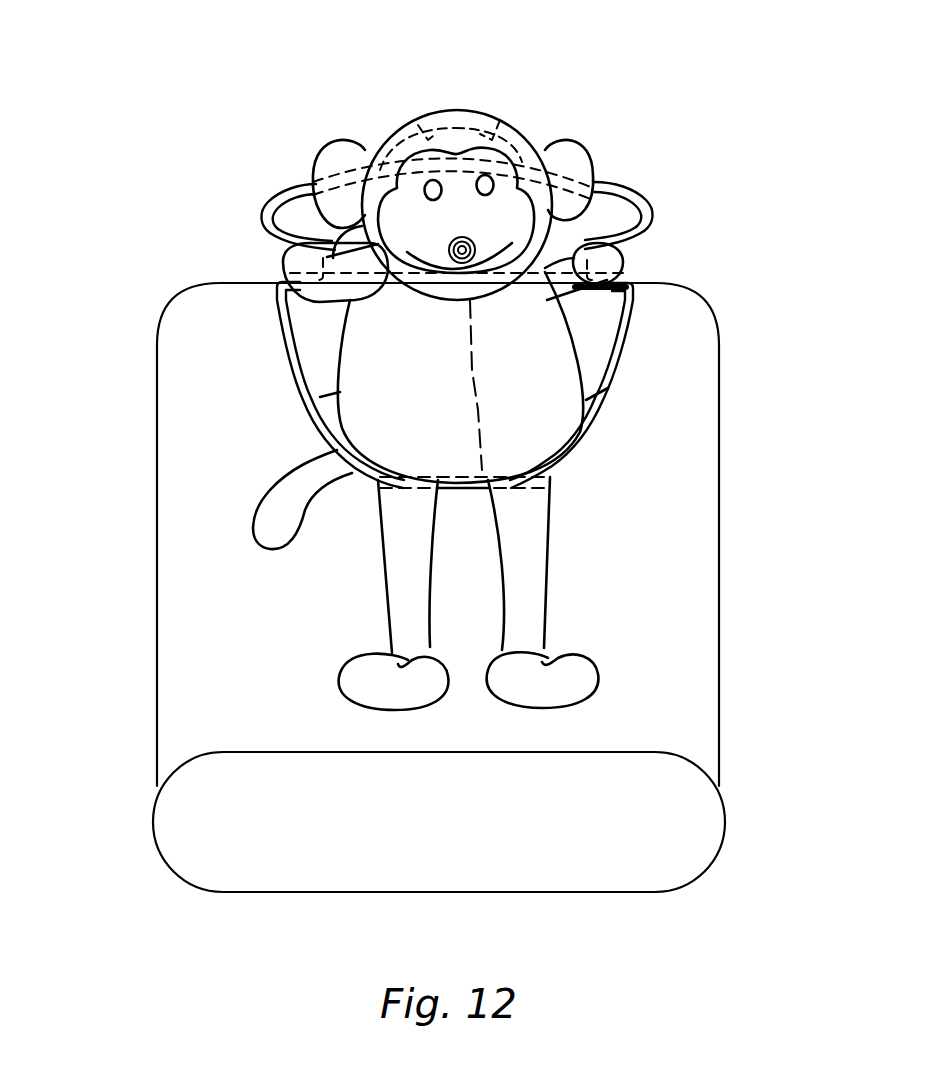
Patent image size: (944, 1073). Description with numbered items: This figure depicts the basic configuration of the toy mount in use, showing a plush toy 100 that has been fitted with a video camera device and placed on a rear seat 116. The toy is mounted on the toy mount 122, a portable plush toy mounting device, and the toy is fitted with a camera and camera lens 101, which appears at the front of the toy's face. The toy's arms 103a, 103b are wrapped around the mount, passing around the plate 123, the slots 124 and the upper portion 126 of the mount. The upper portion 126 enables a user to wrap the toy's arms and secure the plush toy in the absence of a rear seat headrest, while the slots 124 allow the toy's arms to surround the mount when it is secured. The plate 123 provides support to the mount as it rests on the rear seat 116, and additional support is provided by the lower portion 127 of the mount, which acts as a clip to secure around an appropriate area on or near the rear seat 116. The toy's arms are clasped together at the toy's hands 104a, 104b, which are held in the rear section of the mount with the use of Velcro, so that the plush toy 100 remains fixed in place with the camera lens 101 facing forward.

The plush toy 100 is at (400, 369).
The camera lens 101 is at (460, 263).
The toy's arm 103a is at (278, 252).
The toy's arm 103b is at (620, 262).
The toy's hand 104a is at (418, 123).
The toy's hand 104b is at (500, 120).
The rear seat 116 is at (722, 573).
The toy mount 122 is at (242, 190).
The plate 123 is at (313, 363).
The slots 124 is at (277, 263).
The upper portion 126 is at (297, 188).
The lower portion 127 is at (613, 378).